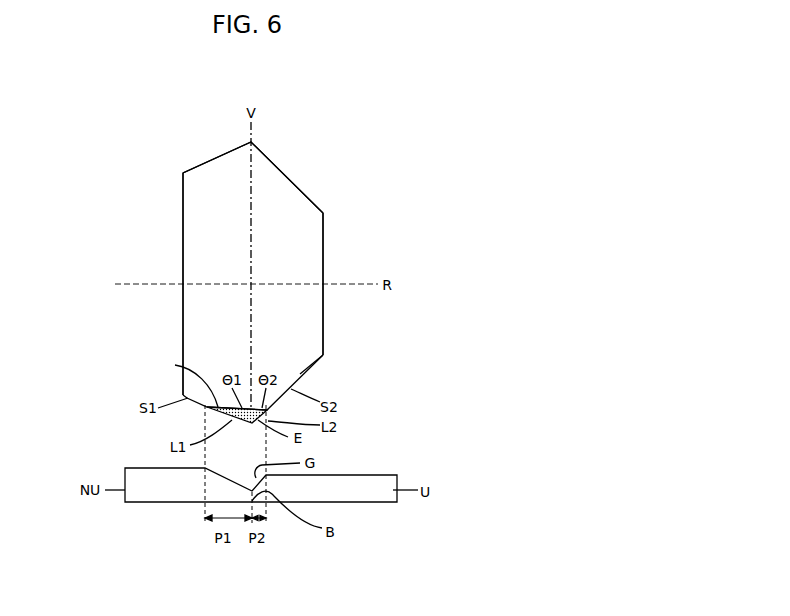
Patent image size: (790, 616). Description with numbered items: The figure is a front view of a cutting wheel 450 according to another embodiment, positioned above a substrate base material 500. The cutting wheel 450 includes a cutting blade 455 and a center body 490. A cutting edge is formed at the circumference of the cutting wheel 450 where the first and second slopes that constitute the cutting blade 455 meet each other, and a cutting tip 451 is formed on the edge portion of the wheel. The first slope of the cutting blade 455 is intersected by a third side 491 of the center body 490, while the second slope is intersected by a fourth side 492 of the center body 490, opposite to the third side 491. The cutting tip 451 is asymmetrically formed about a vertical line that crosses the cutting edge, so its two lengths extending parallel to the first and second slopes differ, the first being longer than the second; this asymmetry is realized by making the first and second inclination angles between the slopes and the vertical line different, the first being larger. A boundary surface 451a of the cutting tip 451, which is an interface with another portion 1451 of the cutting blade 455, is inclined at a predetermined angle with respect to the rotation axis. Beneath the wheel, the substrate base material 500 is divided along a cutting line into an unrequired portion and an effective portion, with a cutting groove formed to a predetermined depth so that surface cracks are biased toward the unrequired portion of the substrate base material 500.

The cutting wheel 450 is at (293, 193).
The center body 490 is at (300, 220).
The third side 491 is at (183, 252).
The fourth side 492 is at (323, 267).
The another portion of the cutting blade 1451 is at (280, 380).
The cutting tip 451 is at (215, 412).
The boundary surface 451a is at (175, 365).
The cutting blade 455 is at (307, 371).
The substrate base material 500 is at (405, 476).